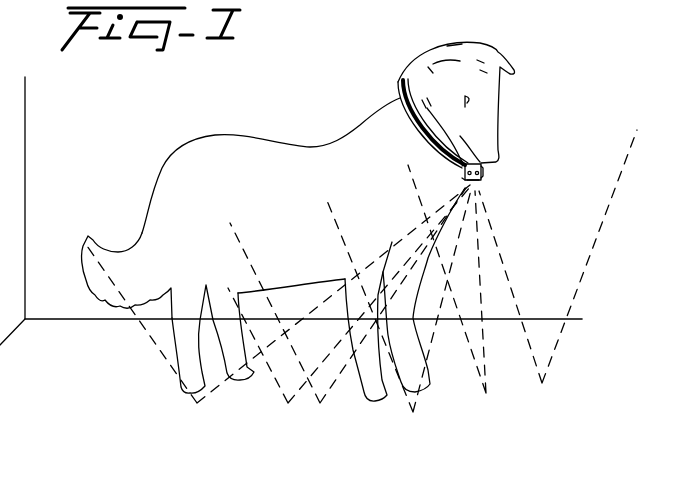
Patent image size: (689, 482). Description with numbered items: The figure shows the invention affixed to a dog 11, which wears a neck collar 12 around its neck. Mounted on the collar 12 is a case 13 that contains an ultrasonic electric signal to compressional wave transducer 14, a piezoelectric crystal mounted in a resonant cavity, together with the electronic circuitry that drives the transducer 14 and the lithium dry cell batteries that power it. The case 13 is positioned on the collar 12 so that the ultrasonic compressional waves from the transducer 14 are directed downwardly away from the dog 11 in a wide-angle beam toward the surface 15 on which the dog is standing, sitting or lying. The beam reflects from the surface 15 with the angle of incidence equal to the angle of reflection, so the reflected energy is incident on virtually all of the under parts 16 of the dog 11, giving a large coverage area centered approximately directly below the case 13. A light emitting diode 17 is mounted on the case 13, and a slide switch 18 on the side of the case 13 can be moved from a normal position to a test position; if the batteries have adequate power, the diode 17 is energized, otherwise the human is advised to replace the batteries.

The dog 11 is at (298, 221).
The neck collar 12 is at (400, 100).
The case 13 is at (463, 178).
The ultrasonic electric signal to compressional wave transducer 14 is at (483, 177).
The surface 15 is at (548, 331).
The under parts 16 is at (297, 288).
The light emitting diode 17 is at (463, 170).
The slide switch 18 is at (477, 185).